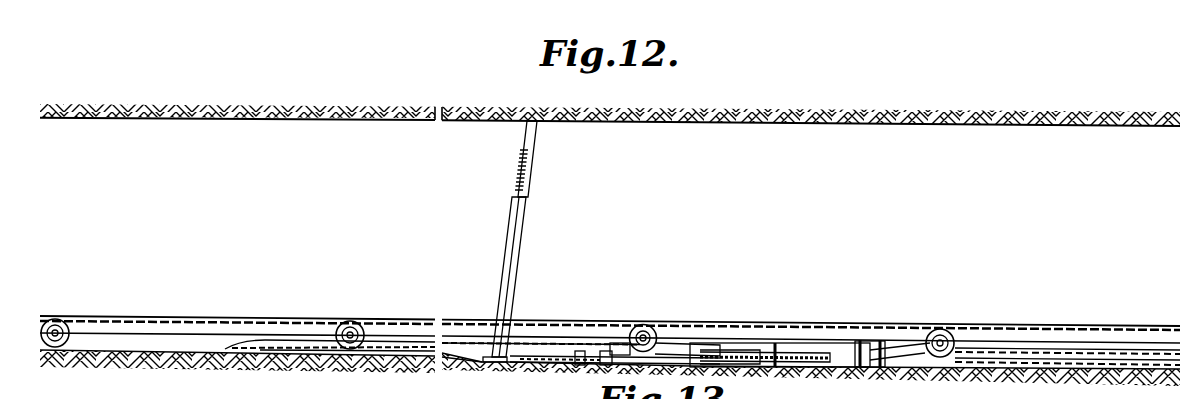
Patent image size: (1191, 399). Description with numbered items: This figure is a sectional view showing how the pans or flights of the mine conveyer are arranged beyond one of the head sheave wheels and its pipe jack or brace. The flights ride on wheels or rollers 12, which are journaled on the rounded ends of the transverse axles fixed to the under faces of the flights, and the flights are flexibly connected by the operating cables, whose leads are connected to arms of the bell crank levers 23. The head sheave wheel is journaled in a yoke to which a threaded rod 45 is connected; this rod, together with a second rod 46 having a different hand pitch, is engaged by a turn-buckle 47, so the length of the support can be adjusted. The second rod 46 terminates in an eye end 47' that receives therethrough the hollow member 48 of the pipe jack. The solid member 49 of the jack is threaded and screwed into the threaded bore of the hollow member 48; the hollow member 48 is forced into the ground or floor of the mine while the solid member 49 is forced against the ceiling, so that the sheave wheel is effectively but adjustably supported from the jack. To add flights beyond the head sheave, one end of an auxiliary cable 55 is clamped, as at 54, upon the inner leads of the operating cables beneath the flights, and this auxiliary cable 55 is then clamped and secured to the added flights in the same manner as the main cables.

The wheels or rollers 12 is at (66, 348).
The bell crank levers 23 is at (822, 368).
The threaded rod 45 is at (667, 355).
The second rod 46 is at (548, 364).
The turn-buckle 47 is at (626, 328).
The eye end 47' is at (469, 378).
The hollow member of pipe jack 48 is at (515, 285).
The solid member of pipe jack 49 is at (535, 158).
The clamp 54 is at (874, 368).
The auxiliary cable 55 is at (405, 356).